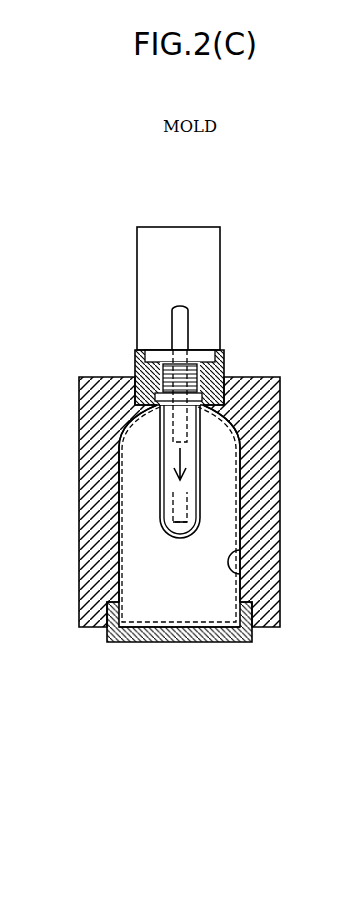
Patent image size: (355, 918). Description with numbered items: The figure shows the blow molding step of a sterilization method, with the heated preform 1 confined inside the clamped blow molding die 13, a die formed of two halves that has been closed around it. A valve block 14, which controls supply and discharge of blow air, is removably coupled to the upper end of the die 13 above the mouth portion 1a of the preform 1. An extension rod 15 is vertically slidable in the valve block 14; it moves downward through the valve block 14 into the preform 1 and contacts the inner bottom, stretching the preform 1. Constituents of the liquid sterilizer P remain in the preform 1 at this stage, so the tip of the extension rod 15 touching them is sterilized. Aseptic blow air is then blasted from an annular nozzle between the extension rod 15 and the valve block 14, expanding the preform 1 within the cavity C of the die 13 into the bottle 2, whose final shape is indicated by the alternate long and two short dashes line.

The preform 1 is at (200, 475).
The mouth portion 1a is at (225, 373).
The bottle 2 is at (237, 519).
The blow molding die 13 is at (79, 587).
The valve block 14 is at (137, 259).
The extension rod 15 is at (172, 497).
The liquid sterilizer P is at (175, 509).
The cavity C is at (231, 578).